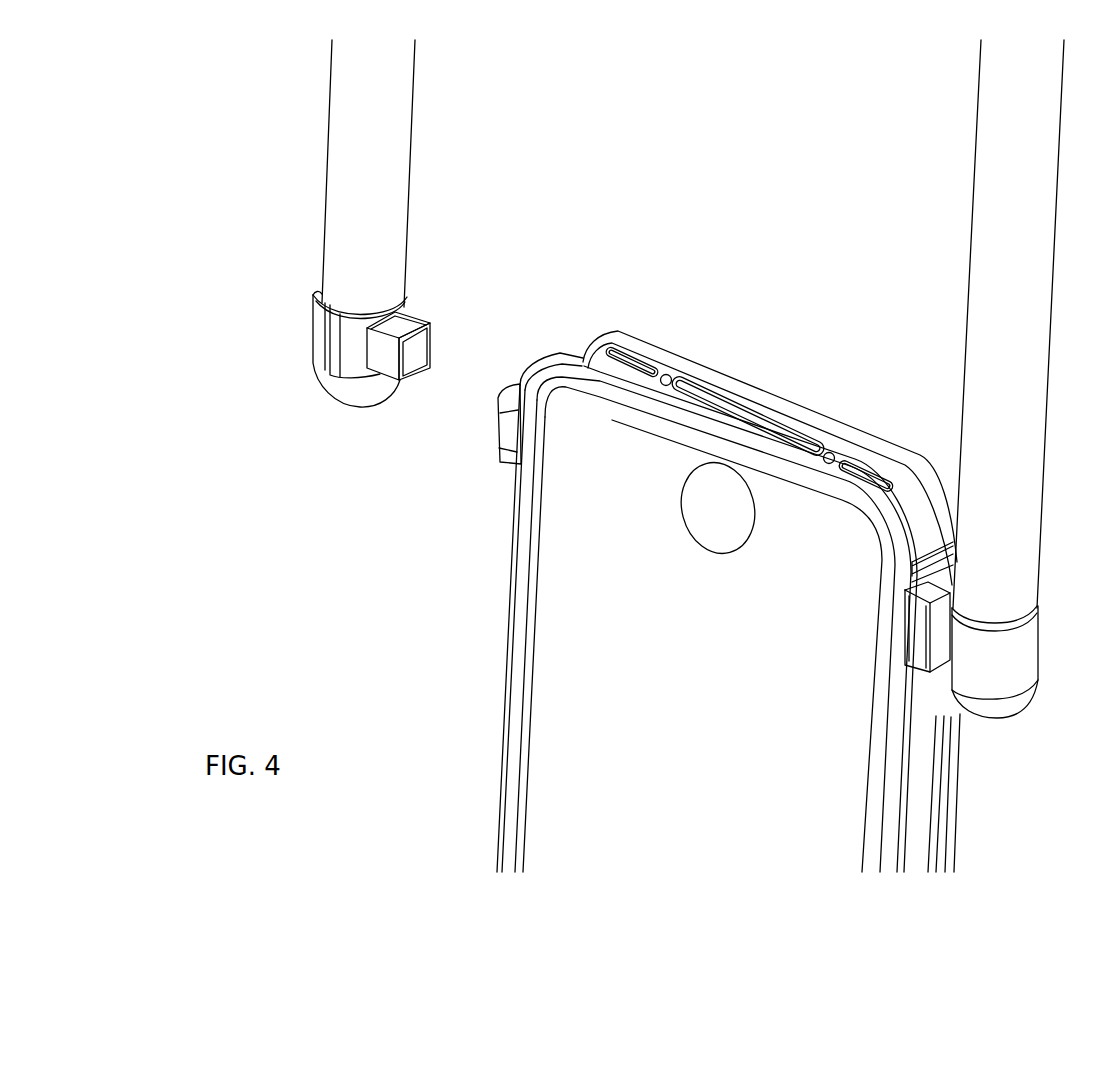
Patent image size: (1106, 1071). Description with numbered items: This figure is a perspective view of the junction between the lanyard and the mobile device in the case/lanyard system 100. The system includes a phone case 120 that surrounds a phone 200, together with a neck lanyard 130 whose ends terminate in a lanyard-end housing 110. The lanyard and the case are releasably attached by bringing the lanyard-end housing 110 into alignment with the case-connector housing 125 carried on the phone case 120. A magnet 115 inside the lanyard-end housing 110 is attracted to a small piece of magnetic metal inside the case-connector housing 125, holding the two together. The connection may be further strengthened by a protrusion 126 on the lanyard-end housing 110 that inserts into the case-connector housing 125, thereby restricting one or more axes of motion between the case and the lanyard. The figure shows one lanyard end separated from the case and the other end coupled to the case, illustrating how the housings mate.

The case/lanyard system 100 is at (644, 554).
The lanyard-end housing 110 is at (340, 398).
The magnet 115 is at (423, 352).
The phone case 120 is at (523, 615).
The case-connector housing 125 is at (510, 437).
The protrusion 126 is at (413, 320).
The neck lanyard 130 is at (348, 222).
The phone 200 is at (565, 703).